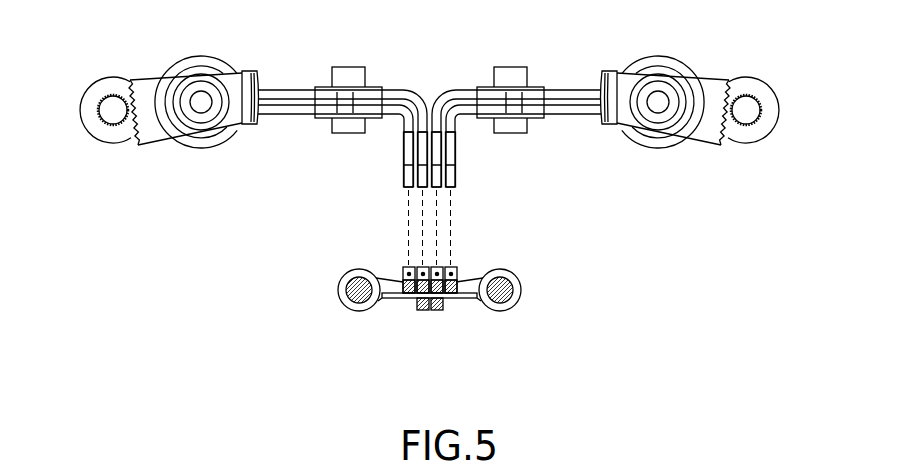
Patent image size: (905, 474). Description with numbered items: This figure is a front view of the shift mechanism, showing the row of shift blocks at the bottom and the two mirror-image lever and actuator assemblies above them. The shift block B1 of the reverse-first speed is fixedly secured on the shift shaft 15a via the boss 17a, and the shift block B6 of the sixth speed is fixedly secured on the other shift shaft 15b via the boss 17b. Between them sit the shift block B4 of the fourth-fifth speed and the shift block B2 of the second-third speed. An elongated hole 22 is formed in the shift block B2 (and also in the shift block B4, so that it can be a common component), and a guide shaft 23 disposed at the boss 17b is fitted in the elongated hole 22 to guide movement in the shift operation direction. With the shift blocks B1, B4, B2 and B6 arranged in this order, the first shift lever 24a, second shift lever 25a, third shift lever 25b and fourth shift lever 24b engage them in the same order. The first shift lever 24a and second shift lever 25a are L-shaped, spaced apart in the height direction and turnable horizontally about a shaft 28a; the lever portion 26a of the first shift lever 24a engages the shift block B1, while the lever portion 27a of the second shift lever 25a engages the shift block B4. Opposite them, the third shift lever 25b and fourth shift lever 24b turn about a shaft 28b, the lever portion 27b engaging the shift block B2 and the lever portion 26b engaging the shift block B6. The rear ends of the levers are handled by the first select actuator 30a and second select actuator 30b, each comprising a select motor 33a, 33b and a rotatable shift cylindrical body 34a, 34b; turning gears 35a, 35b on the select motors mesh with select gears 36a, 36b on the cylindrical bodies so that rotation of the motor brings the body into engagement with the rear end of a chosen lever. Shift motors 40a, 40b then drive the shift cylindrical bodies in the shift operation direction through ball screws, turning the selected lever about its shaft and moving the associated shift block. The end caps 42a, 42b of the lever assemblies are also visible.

The shift shaft 15a is at (339, 288).
The shift shaft 15b is at (520, 288).
The boss 17a is at (345, 301).
The boss 17b is at (514, 303).
The elongated hole 22 is at (442, 303).
The guide shaft 23 is at (457, 303).
The first shift lever 24a is at (293, 115).
The fourth shift lever 24b is at (565, 115).
The second shift lever 25a is at (300, 88).
The third shift lever 25b is at (560, 88).
The lever portion 26a is at (404, 173).
The lever portion 26b is at (455, 182).
The lever portion 27a is at (420, 187).
The lever portion 27b is at (448, 188).
The shaft 28a is at (347, 68).
The shaft 28b is at (508, 67).
The first select actuator 30a is at (129, 145).
The second select actuator 30b is at (726, 142).
The select motor 33a is at (80, 107).
The select motor 33b is at (778, 108).
The shift cylindrical body 34a is at (180, 64).
The shift cylindrical body 34b is at (675, 63).
The turning gear 35a is at (100, 117).
The turning gear 35b is at (752, 123).
The select gear 36a is at (155, 142).
The select gear 36b is at (720, 143).
The shift motor 40a is at (210, 147).
The shift motor 40b is at (680, 147).
The pipe end cap 42a is at (242, 78).
The pipe end cap 42b is at (615, 80).
The shift block of the reverse-1st speed B1 is at (403, 275).
The shift block of the 2nd speed-3rd speed B2 is at (440, 310).
The shift block of the 4th speed-5th speed B4 is at (418, 310).
The shift block of the 6th speed B6 is at (457, 273).